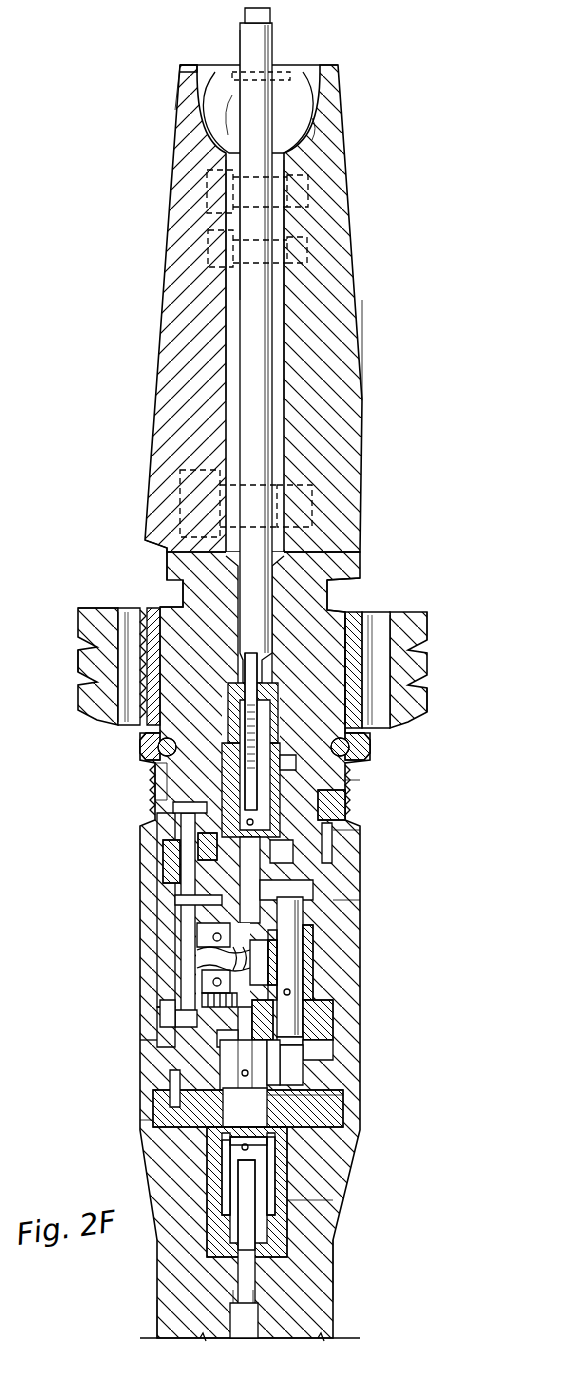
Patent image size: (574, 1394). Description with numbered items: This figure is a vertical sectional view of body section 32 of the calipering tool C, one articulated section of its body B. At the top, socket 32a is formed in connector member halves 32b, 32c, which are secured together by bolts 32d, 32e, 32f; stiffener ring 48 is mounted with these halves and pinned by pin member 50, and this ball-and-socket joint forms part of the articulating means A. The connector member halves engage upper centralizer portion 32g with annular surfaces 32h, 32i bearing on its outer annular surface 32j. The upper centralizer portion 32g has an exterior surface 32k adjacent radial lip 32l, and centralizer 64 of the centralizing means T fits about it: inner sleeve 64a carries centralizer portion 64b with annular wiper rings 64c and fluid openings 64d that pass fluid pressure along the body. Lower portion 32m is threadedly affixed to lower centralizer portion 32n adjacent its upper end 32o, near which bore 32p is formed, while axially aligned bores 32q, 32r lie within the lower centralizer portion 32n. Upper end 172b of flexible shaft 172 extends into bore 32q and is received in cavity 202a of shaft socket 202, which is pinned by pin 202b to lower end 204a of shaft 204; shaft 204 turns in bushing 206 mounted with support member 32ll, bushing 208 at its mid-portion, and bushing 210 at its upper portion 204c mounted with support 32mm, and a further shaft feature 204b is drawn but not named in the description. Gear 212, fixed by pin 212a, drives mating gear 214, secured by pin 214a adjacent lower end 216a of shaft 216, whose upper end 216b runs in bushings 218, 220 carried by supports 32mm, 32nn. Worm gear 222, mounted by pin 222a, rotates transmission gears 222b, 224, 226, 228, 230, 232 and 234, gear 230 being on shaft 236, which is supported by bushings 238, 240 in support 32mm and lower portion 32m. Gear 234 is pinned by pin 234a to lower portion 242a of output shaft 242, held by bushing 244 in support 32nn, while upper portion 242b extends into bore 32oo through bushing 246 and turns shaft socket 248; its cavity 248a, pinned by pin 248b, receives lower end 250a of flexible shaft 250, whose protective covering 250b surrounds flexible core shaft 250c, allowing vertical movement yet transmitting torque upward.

The body section 32 is at (357, 283).
The socket 32a is at (305, 98).
The connector member half 32b is at (330, 212).
The connector member half 32c is at (176, 296).
The bolt 32d is at (210, 190).
The bolt 32e is at (210, 252).
The bolt 32f is at (185, 480).
The upper centralizer portion 32g is at (320, 590).
The annular surface 32h is at (334, 552).
The annular surface 32i is at (172, 556).
The outer annular surface 32j is at (341, 572).
The exterior surface 32k is at (370, 660).
The radial lip 32l is at (172, 600).
The lower portion 32m is at (355, 746).
The lower centralizer portion 32n is at (332, 1272).
The upper end 32o is at (302, 860).
The bore 32oo is at (350, 788).
The support 32nn is at (330, 840).
The bore 32p is at (342, 906).
The bore 32q is at (292, 1216).
The bore 32r is at (240, 1316).
The support 32mm is at (152, 1046).
The support member 32ll is at (151, 1121).
The stiffener ring 48 is at (322, 113).
The pin member 50 is at (295, 70).
The centralizer 64 is at (76, 621).
The inner sleeve 64a is at (400, 705).
The centralizer portion 64b is at (100, 618).
The annular wiper rings 64c is at (82, 642).
The fluid openings 64d is at (126, 656).
The flexible shaft 172 is at (258, 1322).
The upper end 172b is at (257, 1247).
The shaft socket 202 is at (282, 1180).
The shaft socket cavity 202a is at (277, 1160).
The pin 202b is at (282, 1132).
The shaft 204 is at (216, 1086).
The lower end 204a is at (272, 1150).
The pin 204b is at (181, 1096).
The upper portion 204c is at (176, 1012).
The bushing 206 is at (226, 1190).
The bushing 208 is at (302, 1100).
The bushing 210 is at (241, 1032).
The gear 212 is at (282, 1080).
The pin 212a is at (262, 1061).
The gear 214 is at (312, 1046).
The pin 214a is at (302, 1066).
The shaft 216 is at (302, 916).
The lower end 216a is at (302, 1026).
The upper end 216b is at (306, 936).
The bushing 218 is at (322, 1006).
The bushing 220 is at (302, 886).
The worm gear 222 is at (296, 971).
The pin 222a is at (302, 986).
The transmission gear 222b is at (292, 956).
The worm gear 224 is at (236, 916).
The worm gear 226 is at (215, 936).
The gear 228 is at (222, 970).
The gear 230 is at (216, 956).
The gear 232 is at (184, 832).
The transmission gear 234 is at (184, 852).
The pin 234a is at (200, 872).
The shaft 236 is at (205, 890).
The bushing 238 is at (196, 992).
The bushing 240 is at (160, 816).
The output shaft 242 is at (265, 770).
The lower portion 242a is at (292, 870).
The upper portion 242b is at (300, 763).
The bushing 244 is at (196, 900).
The bushing 246 is at (346, 800).
The shaft socket 248 is at (250, 725).
The cavity 248a is at (237, 740).
The pin 248b is at (262, 790).
The flexible shaft 250 is at (283, 41).
The lower end 250a is at (260, 700).
The protective covering 250b is at (248, 42).
The flexible core shaft 250c is at (270, 12).
The articulating means A is at (316, 128).
The body B is at (364, 336).
The calipering tool C is at (152, 96).
The centralizing means T is at (430, 622).